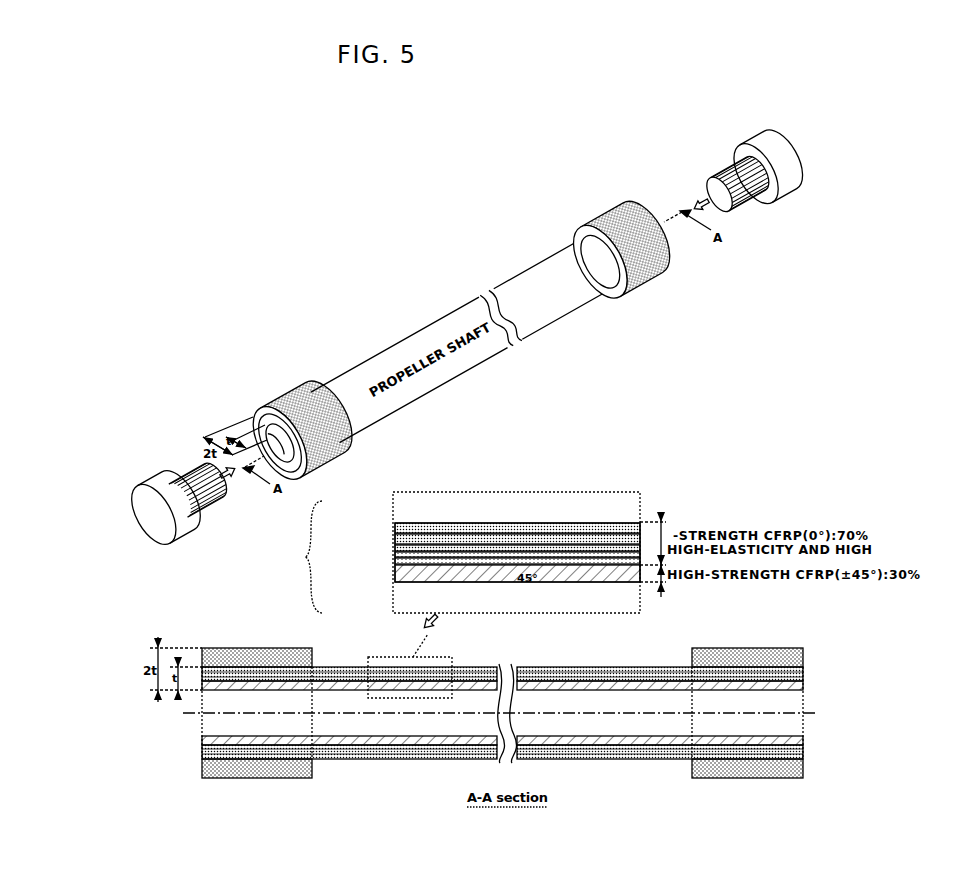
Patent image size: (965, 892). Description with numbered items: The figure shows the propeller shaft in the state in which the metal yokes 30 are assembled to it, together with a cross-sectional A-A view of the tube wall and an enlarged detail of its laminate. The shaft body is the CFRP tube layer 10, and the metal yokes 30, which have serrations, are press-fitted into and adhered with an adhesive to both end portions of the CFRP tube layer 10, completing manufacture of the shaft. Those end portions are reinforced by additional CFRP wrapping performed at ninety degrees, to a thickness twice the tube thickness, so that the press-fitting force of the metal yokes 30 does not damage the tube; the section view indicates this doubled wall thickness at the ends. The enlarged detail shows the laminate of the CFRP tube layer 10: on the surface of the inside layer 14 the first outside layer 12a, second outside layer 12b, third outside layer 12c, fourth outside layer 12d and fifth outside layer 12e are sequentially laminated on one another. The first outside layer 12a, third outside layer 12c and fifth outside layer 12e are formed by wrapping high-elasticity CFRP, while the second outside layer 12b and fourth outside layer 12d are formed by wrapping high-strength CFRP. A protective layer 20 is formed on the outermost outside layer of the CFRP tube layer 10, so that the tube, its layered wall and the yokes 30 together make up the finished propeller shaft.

The CFRP tube layer 10 is at (466, 557).
The first outside layer 12a is at (395, 560).
The second outside layer 12b is at (395, 553).
The third outside layer 12c is at (395, 547).
The fourth outside layer 12d is at (395, 537).
The fifth outside layer 12e is at (395, 526).
The inside layer 14 is at (395, 576).
The protective layer 20 is at (393, 522).
The metal yoke 30 is at (155, 543).